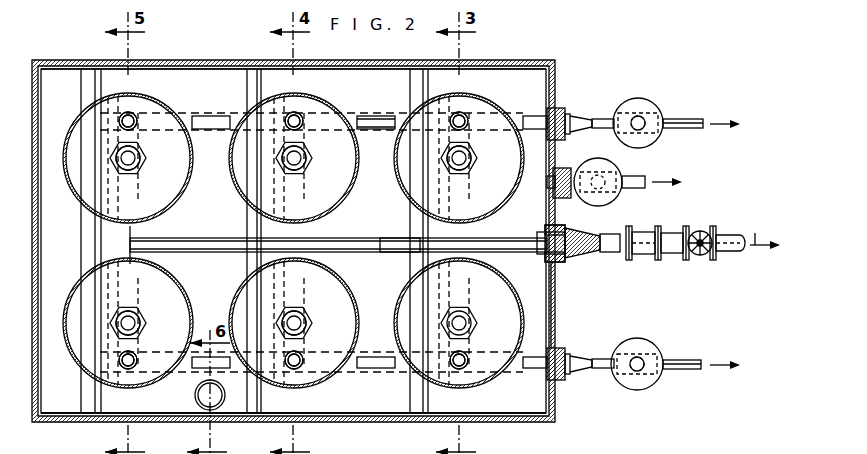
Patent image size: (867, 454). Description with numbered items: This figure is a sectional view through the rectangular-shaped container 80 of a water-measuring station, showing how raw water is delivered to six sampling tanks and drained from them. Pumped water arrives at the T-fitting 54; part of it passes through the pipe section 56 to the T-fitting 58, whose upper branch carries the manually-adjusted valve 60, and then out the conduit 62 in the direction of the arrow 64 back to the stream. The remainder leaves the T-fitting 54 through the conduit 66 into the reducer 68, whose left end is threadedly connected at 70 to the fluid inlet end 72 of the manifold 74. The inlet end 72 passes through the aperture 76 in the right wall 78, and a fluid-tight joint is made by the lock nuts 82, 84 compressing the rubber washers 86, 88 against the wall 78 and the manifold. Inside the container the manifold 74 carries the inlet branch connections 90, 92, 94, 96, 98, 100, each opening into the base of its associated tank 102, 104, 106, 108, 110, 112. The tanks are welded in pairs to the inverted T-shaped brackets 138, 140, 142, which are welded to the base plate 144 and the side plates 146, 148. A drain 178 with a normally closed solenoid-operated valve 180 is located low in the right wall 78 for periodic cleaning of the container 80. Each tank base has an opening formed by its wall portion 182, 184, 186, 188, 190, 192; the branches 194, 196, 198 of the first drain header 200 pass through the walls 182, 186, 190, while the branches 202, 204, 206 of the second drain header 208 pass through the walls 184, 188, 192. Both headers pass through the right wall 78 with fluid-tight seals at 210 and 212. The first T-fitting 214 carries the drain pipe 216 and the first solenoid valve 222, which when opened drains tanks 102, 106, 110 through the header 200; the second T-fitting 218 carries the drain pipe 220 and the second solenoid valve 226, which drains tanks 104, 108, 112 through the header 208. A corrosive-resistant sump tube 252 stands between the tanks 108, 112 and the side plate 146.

The T-fitting 54 is at (651, 228).
The pipe section 56 is at (672, 256).
The T-fitting 58 is at (712, 226).
The manually-adjusted valve 60 is at (700, 257).
The conduit 62 is at (733, 253).
The arrow 64 is at (760, 240).
The conduit 66 is at (629, 262).
The reducer 68 is at (596, 256).
The threaded connection 70 is at (598, 233).
The fluid inlet end 72 is at (543, 250).
The manifold 74 is at (358, 268).
The aperture 76 is at (553, 226).
The right wall 78 is at (556, 321).
The container 80 is at (567, 66).
The lock nut 82 is at (547, 264).
The lock nut 84 is at (572, 260).
The rubber washer 86 is at (546, 228).
The rubber washer 88 is at (556, 266).
The inlet branch connection 90 is at (466, 192).
The inlet branch connection 92 is at (470, 290).
The inlet branch connection 94 is at (300, 192).
The inlet branch connection 96 is at (304, 290).
The inlet branch connection 98 is at (140, 190).
The inlet branch connection 100 is at (137, 290).
The tank 102 is at (407, 200).
The tank 104 is at (396, 260).
The tank 106 is at (242, 200).
The tank 108 is at (242, 280).
The tank 110 is at (78, 200).
The tank 112 is at (78, 280).
The inverted T-shaped bracket 138 is at (426, 72).
The inverted T-shaped bracket 140 is at (260, 72).
The inverted T-shaped bracket 142 is at (95, 72).
The base plate 144 is at (80, 424).
The side plate 146 is at (400, 424).
The side plate 148 is at (203, 60).
The drain 178 is at (566, 168).
The solenoid-operated valve 180 is at (606, 165).
The wall portion 182 is at (466, 114).
The wall portion 184 is at (465, 368).
The wall portion 186 is at (302, 114).
The wall portion 188 is at (300, 368).
The wall portion 190 is at (118, 118).
The wall portion 192 is at (120, 366).
The branch 194 is at (448, 118).
The branch 196 is at (284, 118).
The branch 198 is at (138, 114).
The first drain header 200 is at (530, 105).
The branch 202 is at (468, 364).
The branch 204 is at (303, 364).
The branch 206 is at (118, 360).
The second drain header 208 is at (545, 390).
The fluid-tight seal 210 is at (565, 108).
The fluid-tight seal 212 is at (566, 380).
The first T-fitting 214 is at (638, 114).
The drain pipe 216 is at (688, 122).
The second T-fitting 218 is at (636, 356).
The drain pipe 220 is at (678, 360).
The first solenoid valve 222 is at (650, 108).
The second solenoid valve 226 is at (652, 345).
The sump tube 252 is at (194, 395).